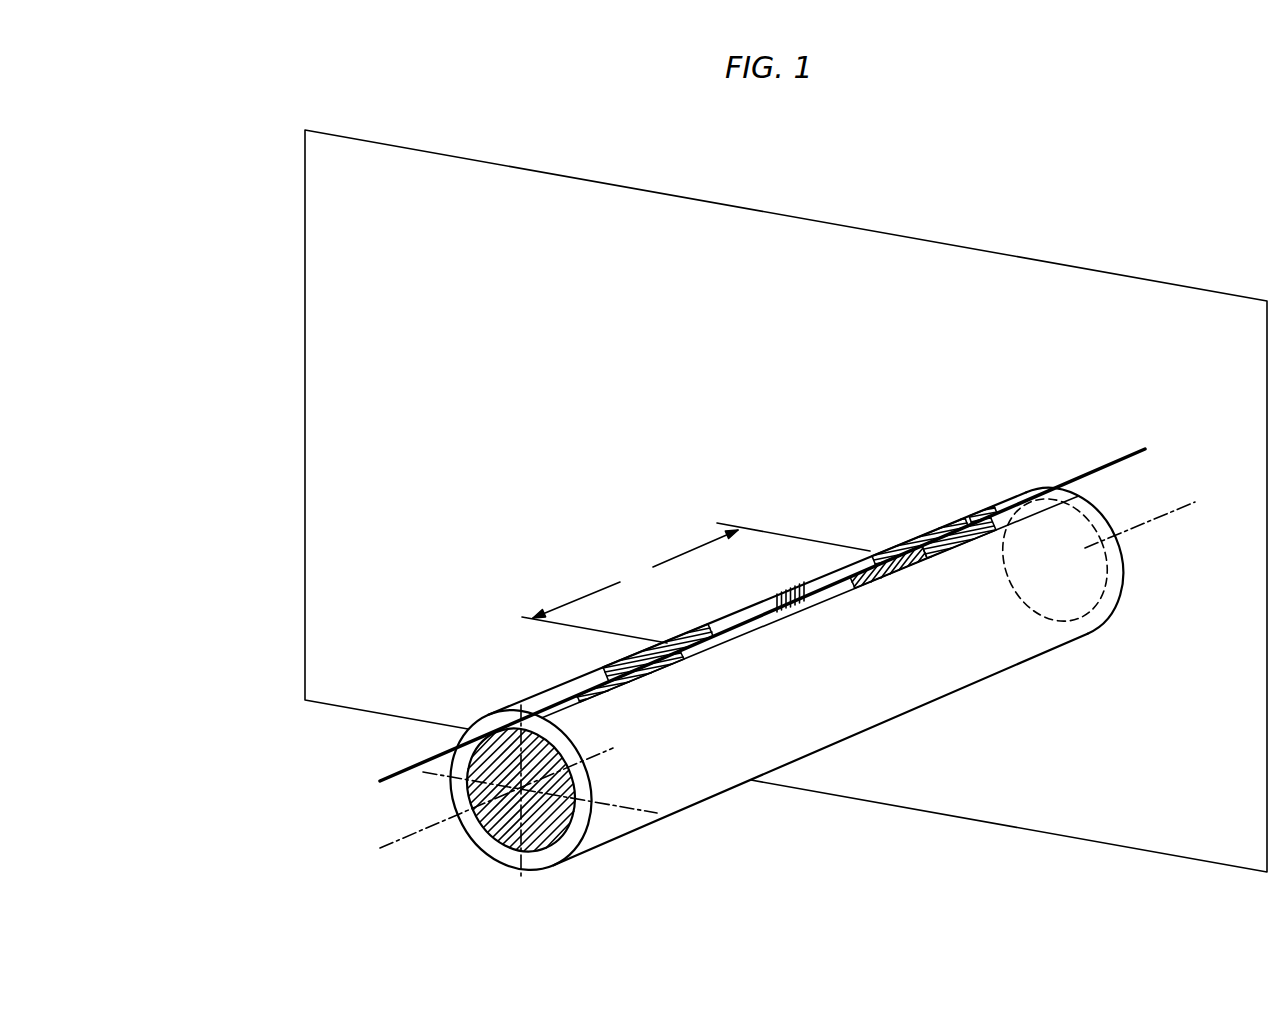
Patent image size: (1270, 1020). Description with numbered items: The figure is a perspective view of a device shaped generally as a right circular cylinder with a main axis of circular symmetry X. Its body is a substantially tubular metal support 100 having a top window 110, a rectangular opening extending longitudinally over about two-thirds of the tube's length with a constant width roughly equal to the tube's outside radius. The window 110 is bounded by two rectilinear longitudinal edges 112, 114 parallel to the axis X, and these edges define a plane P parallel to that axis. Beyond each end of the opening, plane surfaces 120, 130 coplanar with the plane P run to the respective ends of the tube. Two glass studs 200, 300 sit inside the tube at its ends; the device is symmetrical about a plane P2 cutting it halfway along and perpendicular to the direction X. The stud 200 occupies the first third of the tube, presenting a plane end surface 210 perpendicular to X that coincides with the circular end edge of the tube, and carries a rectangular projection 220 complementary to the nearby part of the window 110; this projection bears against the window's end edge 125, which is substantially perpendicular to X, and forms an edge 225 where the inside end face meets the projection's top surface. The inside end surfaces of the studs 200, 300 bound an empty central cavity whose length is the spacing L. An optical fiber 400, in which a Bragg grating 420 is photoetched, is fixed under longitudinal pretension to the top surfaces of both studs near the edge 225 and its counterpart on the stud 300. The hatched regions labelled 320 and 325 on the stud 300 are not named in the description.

The tubular metal support 100 is at (895, 695).
The top window 110 is at (757, 624).
The longitudinal edge 112 is at (800, 584).
The longitudinal edge 114 is at (852, 597).
The plane surface 120 is at (533, 702).
The end edge 125 is at (613, 684).
The plane surface 130 is at (1027, 490).
The glass stud 200 is at (470, 794).
The plane end surface 210 is at (517, 834).
The projection 220 is at (622, 662).
The edge 225 is at (706, 643).
The glass stud 300 is at (921, 528).
The second band first segment 320 is at (876, 549).
The second band second segment 325 is at (930, 556).
The optical fiber 400 is at (413, 768).
The Bragg grating 420 is at (777, 601).
The plane P is at (985, 505).
The plane of symmetry P2 is at (315, 160).
The main axis X is at (814, 652).
The spacing L is at (696, 583).